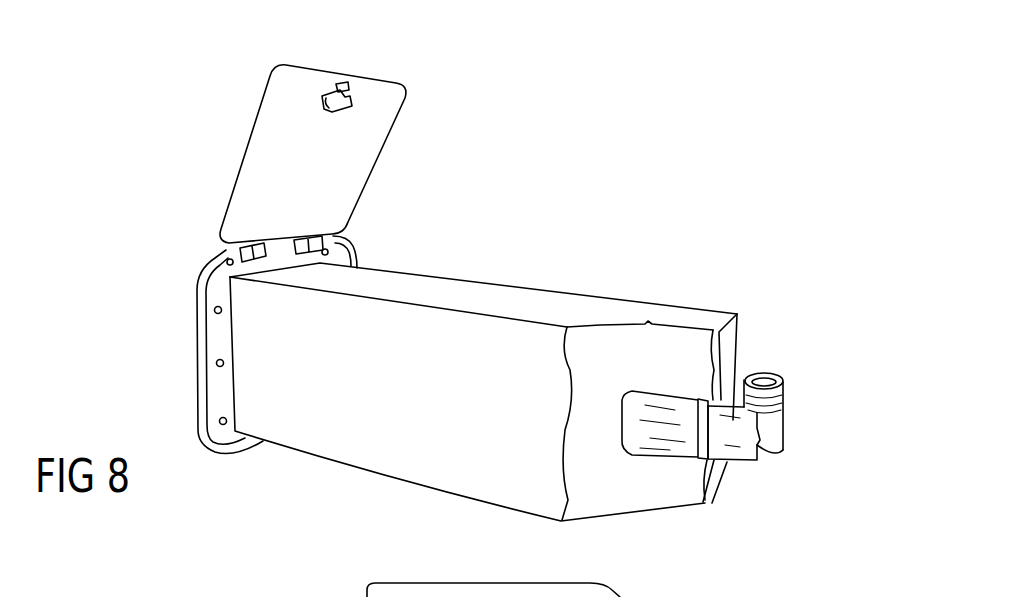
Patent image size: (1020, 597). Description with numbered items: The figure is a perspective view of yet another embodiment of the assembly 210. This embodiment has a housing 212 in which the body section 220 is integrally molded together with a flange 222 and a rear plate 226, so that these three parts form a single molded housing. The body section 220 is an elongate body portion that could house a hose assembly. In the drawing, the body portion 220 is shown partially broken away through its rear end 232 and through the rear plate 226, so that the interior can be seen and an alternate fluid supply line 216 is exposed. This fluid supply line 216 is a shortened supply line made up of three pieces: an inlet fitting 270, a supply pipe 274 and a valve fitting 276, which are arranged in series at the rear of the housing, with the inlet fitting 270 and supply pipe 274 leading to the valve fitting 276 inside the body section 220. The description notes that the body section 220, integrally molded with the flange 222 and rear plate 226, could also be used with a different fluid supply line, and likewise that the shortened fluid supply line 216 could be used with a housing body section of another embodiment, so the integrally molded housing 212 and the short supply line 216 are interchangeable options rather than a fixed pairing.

The assembly 210 is at (510, 117).
The housing 212 is at (450, 250).
The body section 220 is at (507, 280).
The flange 222 is at (197, 333).
The rear plate 226 is at (722, 355).
The rear end 232 is at (703, 320).
The valve fitting 276 is at (650, 392).
The supply pipe 274 is at (712, 435).
The inlet fitting 270 is at (768, 448).
The fluid supply line 216 is at (797, 419).